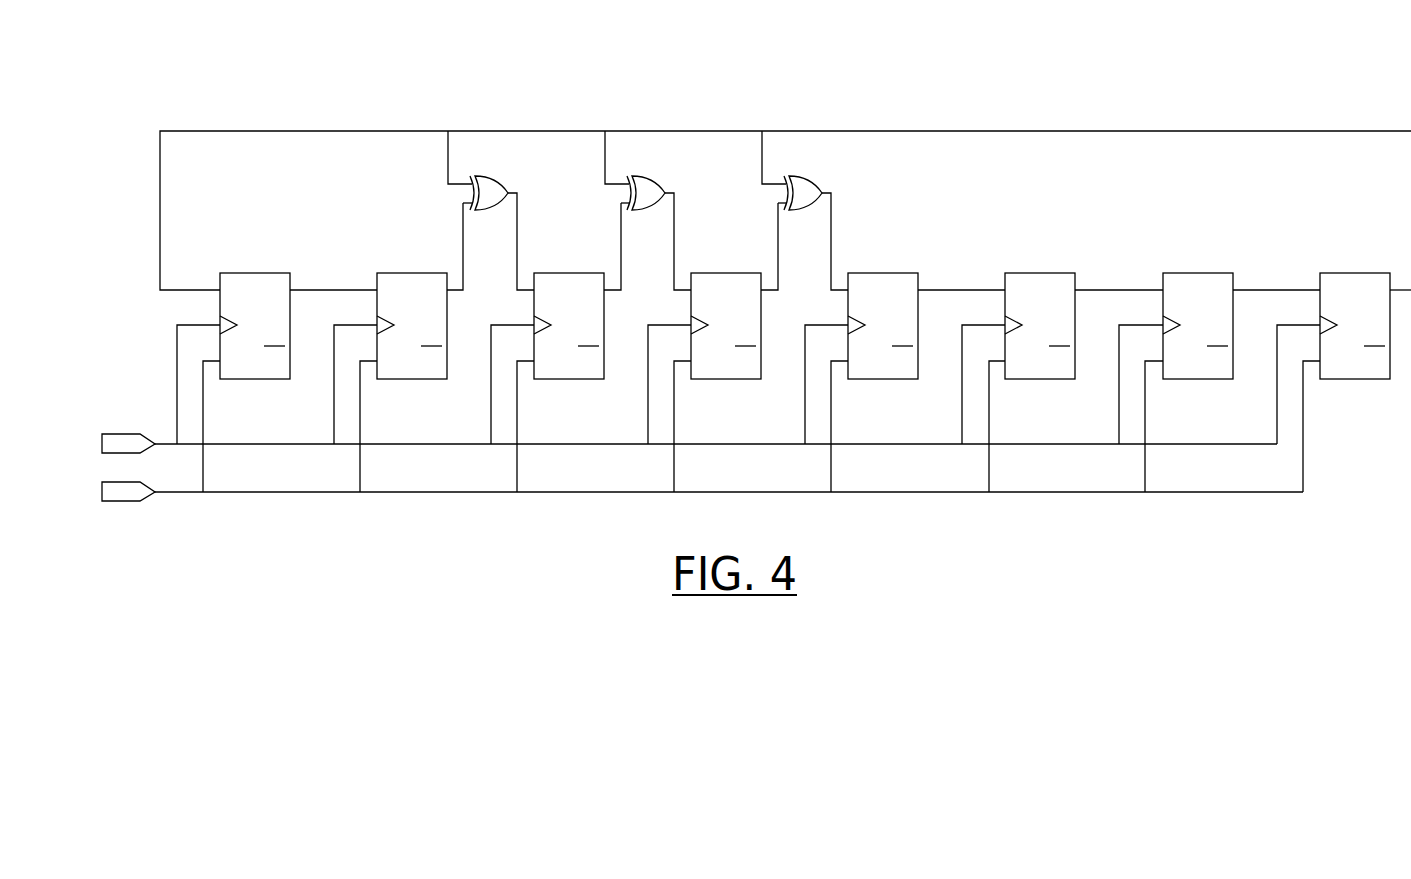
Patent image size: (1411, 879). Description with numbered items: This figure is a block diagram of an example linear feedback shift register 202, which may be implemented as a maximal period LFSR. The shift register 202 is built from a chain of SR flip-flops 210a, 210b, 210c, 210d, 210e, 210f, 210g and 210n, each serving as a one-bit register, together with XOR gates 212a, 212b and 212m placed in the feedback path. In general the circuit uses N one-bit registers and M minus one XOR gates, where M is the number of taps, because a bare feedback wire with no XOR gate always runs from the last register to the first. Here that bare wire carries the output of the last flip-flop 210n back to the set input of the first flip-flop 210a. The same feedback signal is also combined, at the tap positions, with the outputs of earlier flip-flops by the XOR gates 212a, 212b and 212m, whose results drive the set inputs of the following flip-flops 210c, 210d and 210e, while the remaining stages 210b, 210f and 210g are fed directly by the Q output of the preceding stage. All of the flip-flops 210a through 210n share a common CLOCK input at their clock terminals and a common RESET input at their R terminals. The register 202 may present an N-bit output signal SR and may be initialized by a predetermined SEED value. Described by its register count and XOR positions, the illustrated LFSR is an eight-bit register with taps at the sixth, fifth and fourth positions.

The linear feedback shift register 202 is at (752, 261).
The SR flip-flop 210a is at (281, 272).
The SR flip-flop 210b is at (438, 272).
The SR flip-flop 210c is at (594, 272).
The SR flip-flop 210d is at (752, 272).
The SR flip-flop 210e is at (908, 272).
The SR flip-flop 210f is at (1065, 272).
The SR flip-flop 210g is at (1224, 272).
The SR flip-flop 210n is at (1381, 272).
The XOR gate 212a is at (481, 179).
The XOR gate 212b is at (638, 179).
The XOR gate 212m is at (795, 179).